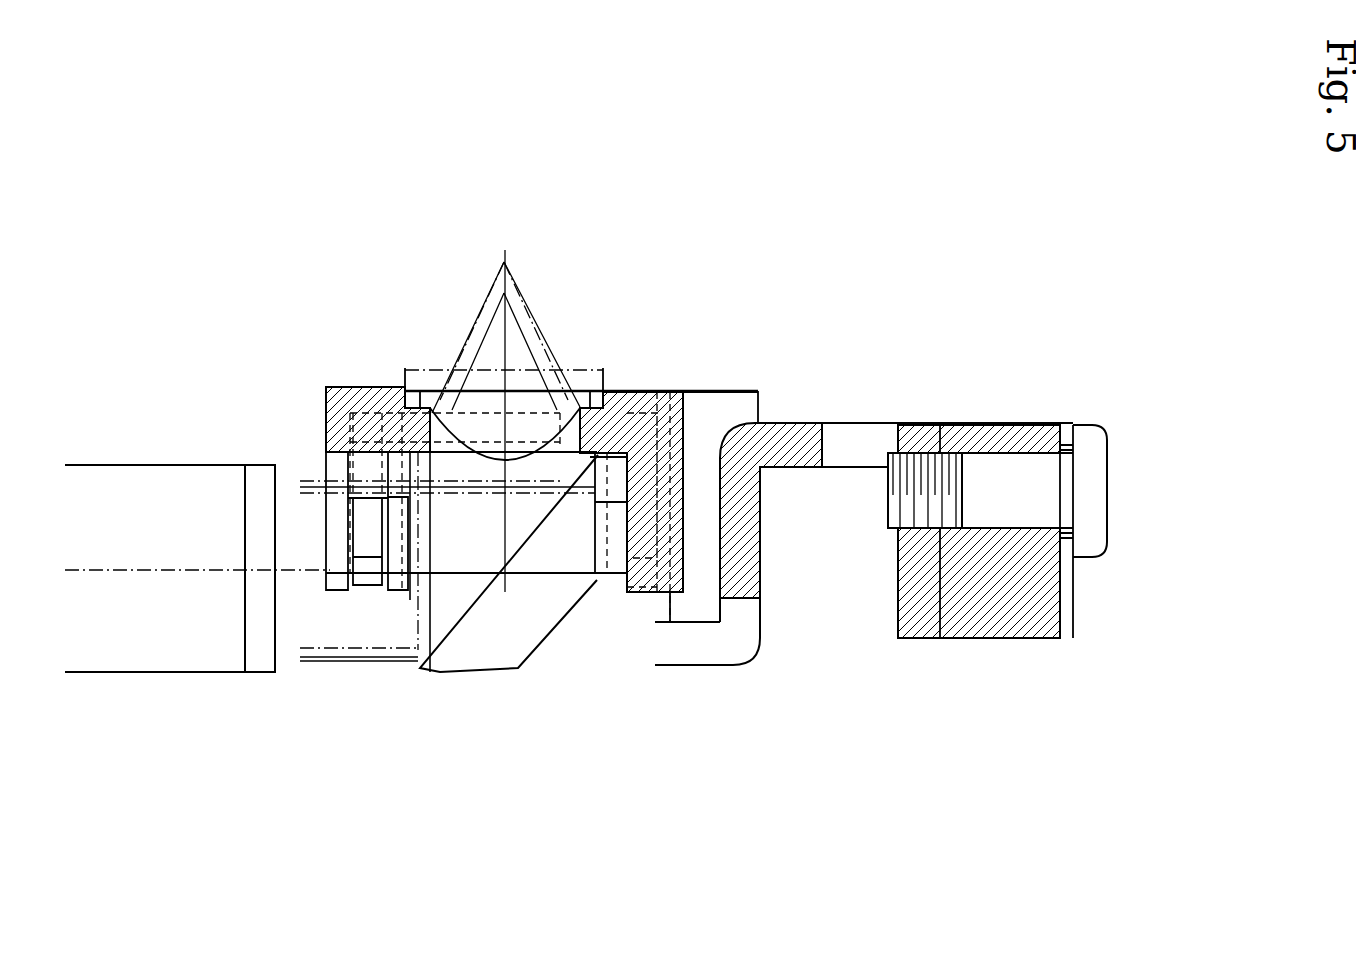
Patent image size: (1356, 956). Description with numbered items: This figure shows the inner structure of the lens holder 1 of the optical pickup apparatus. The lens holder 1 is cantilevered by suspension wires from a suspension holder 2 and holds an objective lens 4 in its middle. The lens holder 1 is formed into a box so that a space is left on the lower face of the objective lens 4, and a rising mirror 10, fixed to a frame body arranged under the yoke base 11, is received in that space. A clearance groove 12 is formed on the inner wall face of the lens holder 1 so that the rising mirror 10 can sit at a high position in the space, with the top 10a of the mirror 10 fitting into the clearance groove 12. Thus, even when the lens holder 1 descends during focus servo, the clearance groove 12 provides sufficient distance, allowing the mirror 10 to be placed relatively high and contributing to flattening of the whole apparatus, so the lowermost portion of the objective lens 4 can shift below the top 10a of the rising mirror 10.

The lens holder 1 is at (378, 387).
The objective lens 4 is at (585, 367).
The clearance groove 12 is at (622, 405).
The top of the mirror 10a is at (587, 507).
The rising mirror 10 is at (492, 650).
The yoke base 11 is at (725, 643).
The suspension holder 2 is at (985, 613).